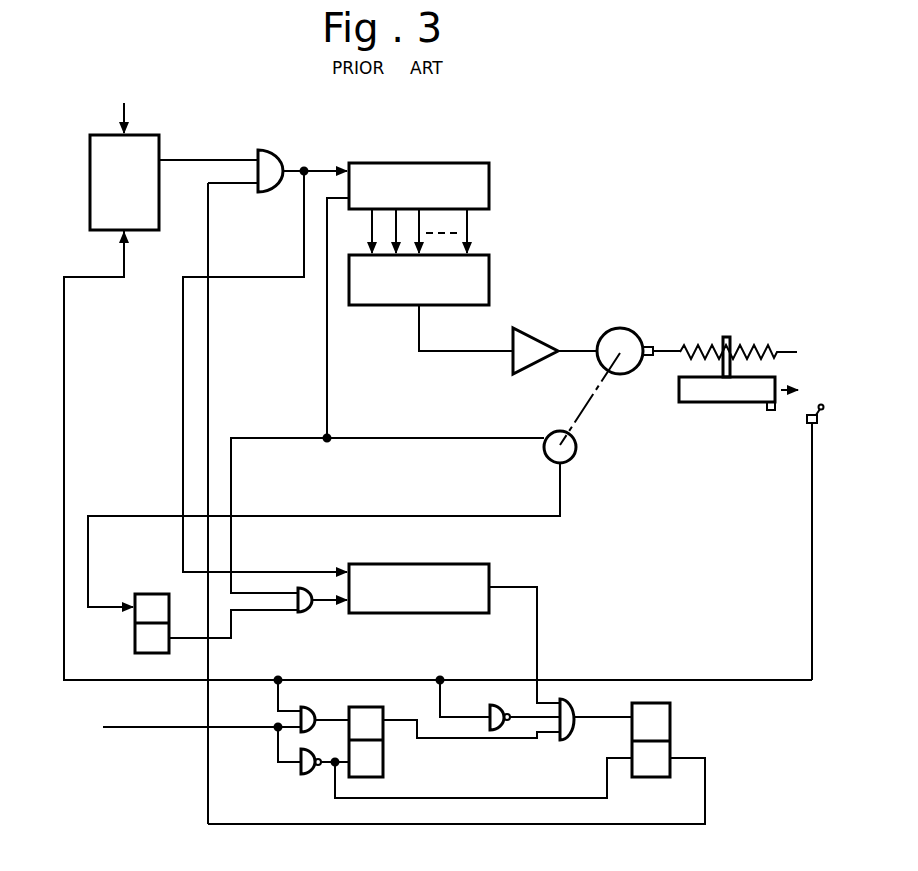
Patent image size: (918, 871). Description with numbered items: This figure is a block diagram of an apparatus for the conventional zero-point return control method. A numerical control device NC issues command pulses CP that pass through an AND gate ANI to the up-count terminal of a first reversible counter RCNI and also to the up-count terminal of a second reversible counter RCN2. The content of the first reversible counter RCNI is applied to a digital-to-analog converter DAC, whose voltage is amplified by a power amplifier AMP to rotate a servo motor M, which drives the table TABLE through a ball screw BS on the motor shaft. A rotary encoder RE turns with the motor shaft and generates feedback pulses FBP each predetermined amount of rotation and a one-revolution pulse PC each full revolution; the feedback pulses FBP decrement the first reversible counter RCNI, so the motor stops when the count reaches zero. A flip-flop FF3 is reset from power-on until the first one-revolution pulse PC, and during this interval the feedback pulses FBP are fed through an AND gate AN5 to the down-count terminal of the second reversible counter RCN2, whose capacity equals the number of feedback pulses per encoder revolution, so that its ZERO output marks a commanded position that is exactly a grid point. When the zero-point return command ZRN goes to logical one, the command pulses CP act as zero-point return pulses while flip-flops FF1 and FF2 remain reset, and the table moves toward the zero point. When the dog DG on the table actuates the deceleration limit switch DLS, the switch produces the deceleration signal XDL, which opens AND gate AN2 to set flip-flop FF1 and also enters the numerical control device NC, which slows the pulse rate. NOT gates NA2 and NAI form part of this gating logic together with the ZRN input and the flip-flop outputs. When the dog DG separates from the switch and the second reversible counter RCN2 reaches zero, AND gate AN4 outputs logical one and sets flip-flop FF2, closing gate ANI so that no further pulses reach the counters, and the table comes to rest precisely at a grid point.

The zero-point return command ZRN is at (177, 411).
The numerical control device NC is at (150, 133).
The command pulse CP is at (210, 158).
The AND gate ANI is at (280, 156).
The first reversible counter RCNI is at (490, 186).
The digital-to-analog converter DAC is at (490, 281).
The power amplifier AMP is at (535, 336).
The servo motor M is at (622, 338).
The ball screw BS is at (762, 352).
The table TABLE is at (720, 395).
The dog DG is at (770, 412).
The deceleration limit switch DLS is at (818, 419).
The deceleration signal XDL is at (810, 540).
The rotary encoder RE is at (577, 447).
The feedback pulse FBP is at (478, 437).
The one-revolution pulse PC is at (565, 483).
The flip-flop FF3 is at (150, 592).
The AND gate AN5 is at (312, 614).
The second reversible counter RCN2 is at (487, 575).
The zero output ZERO is at (538, 637).
The AND gate AN2 is at (318, 708).
The NOT gate NA2 is at (310, 775).
The flip-flop FF1 is at (384, 706).
The NOT gate NAI is at (510, 697).
The AND gate AN4 is at (565, 742).
The flip-flop FF2 is at (671, 710).